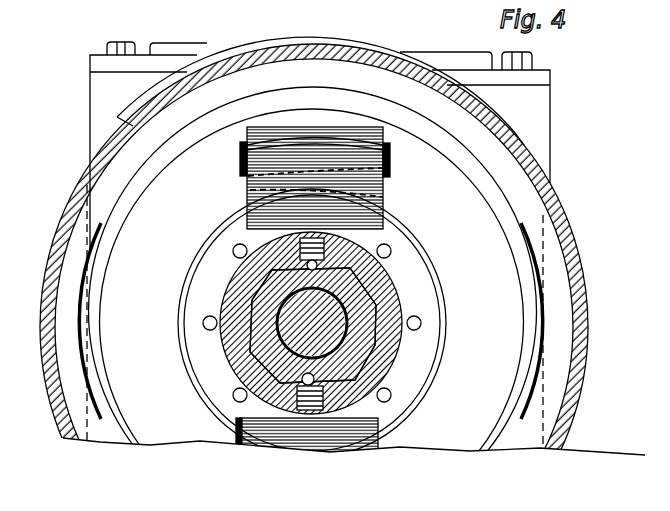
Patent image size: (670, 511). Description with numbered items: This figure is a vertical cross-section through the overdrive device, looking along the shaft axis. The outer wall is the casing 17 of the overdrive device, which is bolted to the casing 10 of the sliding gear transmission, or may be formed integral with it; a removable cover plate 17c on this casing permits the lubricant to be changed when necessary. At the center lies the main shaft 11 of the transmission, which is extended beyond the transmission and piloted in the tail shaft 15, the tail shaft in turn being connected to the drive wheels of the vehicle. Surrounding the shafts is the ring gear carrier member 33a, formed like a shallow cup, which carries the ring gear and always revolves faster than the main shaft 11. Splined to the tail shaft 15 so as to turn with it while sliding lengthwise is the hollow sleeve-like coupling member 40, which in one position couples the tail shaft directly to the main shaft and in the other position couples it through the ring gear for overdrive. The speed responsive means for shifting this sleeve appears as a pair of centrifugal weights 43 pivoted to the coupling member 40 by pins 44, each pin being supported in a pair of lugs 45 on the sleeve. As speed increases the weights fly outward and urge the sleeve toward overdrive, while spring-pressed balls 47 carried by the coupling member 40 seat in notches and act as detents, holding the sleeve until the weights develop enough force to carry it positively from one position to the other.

The casing 10 is at (93, 127).
The main shaft 11 is at (337, 313).
The tail shaft 15 is at (385, 363).
The casing of the overdrive device 17 is at (557, 231).
The removable cover plate 17c is at (370, 53).
The ring gear carrier member 33a is at (507, 293).
The coupling member 40 is at (425, 304).
The centrifugal weights 43 is at (262, 192).
The pins 44 is at (392, 165).
The lugs 45 is at (388, 196).
The spring-pressed balls 47 is at (270, 270).